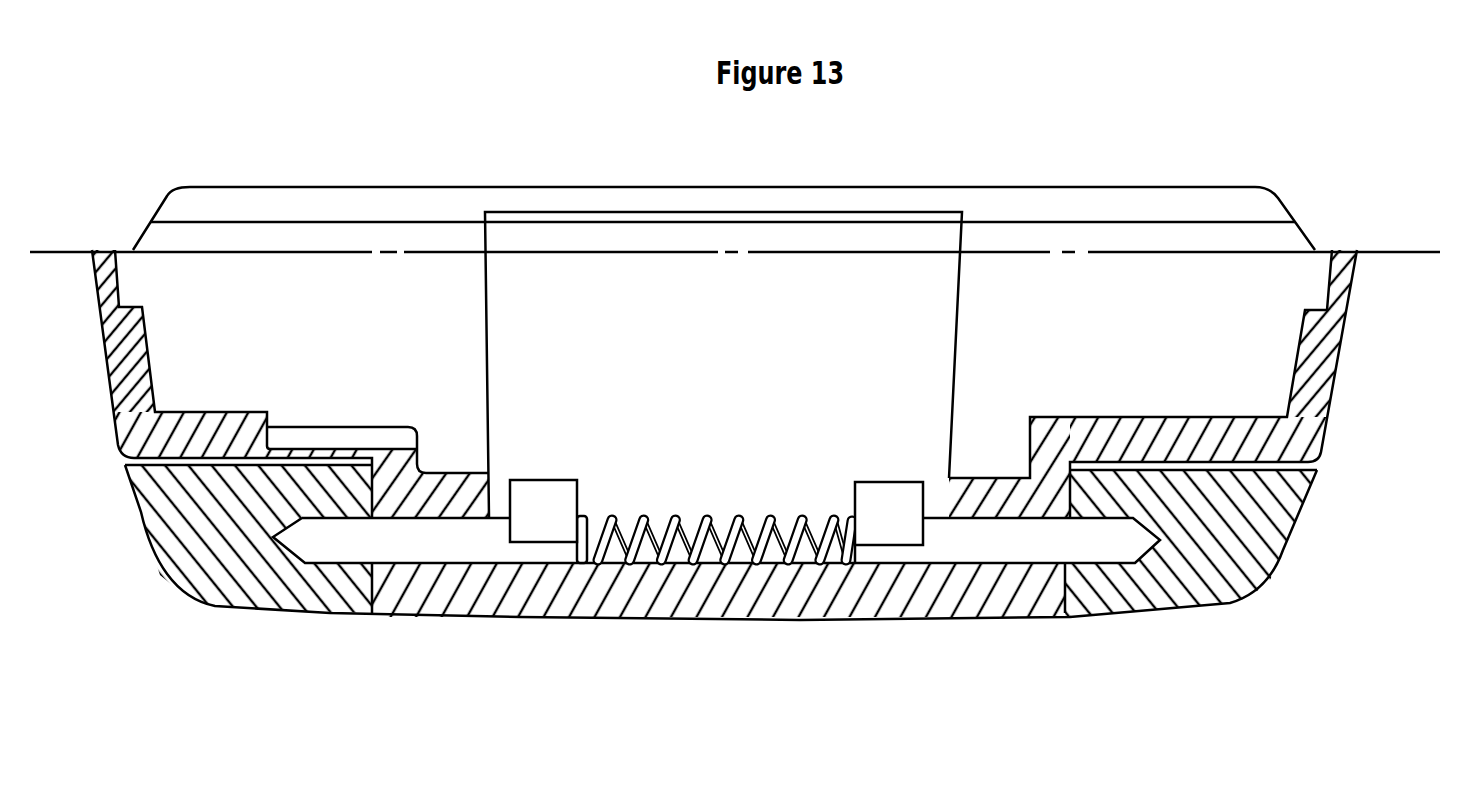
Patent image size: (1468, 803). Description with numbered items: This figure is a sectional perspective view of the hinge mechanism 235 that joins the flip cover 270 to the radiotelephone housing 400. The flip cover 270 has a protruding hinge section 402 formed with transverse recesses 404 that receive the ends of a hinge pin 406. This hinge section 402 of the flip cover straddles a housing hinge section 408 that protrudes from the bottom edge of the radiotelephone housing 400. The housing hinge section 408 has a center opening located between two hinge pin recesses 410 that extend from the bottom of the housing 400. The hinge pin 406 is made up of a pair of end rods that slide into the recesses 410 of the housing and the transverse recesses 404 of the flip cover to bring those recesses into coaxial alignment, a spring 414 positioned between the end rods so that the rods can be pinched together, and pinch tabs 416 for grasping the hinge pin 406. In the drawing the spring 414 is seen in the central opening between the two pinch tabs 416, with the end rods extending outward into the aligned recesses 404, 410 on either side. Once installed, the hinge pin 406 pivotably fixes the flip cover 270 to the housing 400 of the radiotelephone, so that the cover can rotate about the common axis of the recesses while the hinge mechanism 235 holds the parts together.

The hinge mechanism 235 is at (920, 630).
The flip cover 270 is at (497, 620).
The radiotelephone housing 400 is at (108, 378).
The protruding hinge section 402 is at (243, 608).
The transverse recesses 404 is at (318, 503).
The hinge pin 406 is at (673, 506).
The housing hinge section 408 is at (458, 478).
The hinge pin recesses 410 is at (415, 533).
The spring 414 is at (730, 523).
The pinch tabs 416 is at (545, 503).